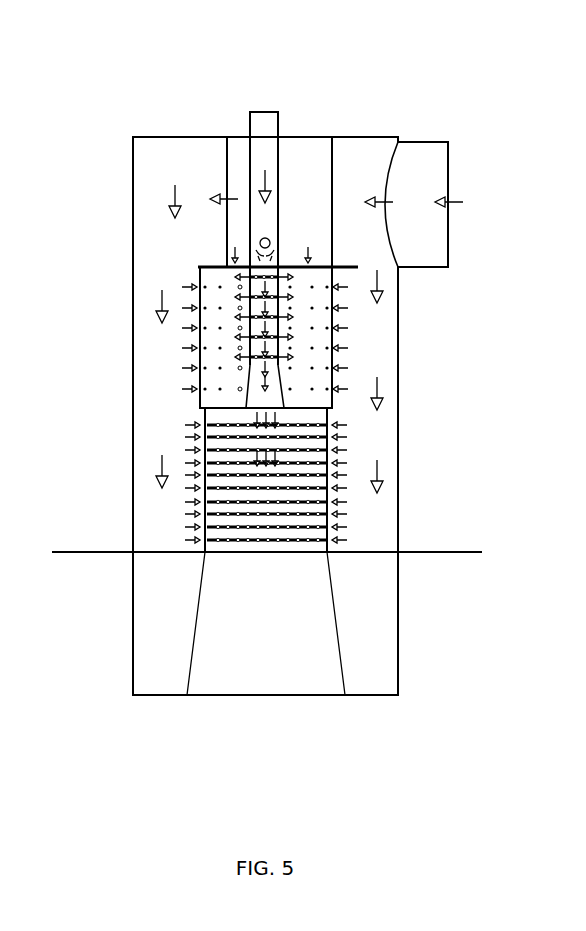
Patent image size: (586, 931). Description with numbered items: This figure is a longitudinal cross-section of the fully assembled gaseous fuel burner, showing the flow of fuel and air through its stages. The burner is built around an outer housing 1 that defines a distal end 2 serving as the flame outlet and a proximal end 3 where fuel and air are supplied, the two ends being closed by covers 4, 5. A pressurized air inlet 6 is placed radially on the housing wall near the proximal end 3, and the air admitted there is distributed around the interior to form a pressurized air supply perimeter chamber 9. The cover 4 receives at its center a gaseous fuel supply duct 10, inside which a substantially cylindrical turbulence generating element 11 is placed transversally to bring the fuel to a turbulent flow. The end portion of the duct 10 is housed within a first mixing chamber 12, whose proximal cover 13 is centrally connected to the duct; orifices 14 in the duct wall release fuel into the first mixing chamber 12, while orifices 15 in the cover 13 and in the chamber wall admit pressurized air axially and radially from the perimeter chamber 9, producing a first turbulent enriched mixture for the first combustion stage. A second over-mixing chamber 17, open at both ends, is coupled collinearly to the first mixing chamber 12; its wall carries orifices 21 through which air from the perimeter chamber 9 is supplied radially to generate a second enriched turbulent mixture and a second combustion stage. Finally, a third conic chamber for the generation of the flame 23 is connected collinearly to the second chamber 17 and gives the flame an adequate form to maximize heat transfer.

The outer housing 1 is at (420, 417).
The distal end 2 is at (110, 560).
The proximal end 3 is at (298, 128).
The cover 4 is at (185, 138).
The cover 5 is at (158, 552).
The pressurized air inlet 6 is at (433, 230).
The pressurized air supply perimeter chamber 9 is at (158, 497).
The gaseous fuel supply duct 10 is at (263, 122).
The turbulence generating element 11 is at (269, 237).
The first mixing chamber 12 is at (208, 278).
The cover 13 is at (200, 266).
The orifices 14 is at (278, 270).
The orifices 15 is at (322, 368).
The second over-mixing chamber 17 is at (220, 418).
The orifices 21 is at (327, 543).
The third conic chamber for the generation of the flame 23 is at (275, 640).